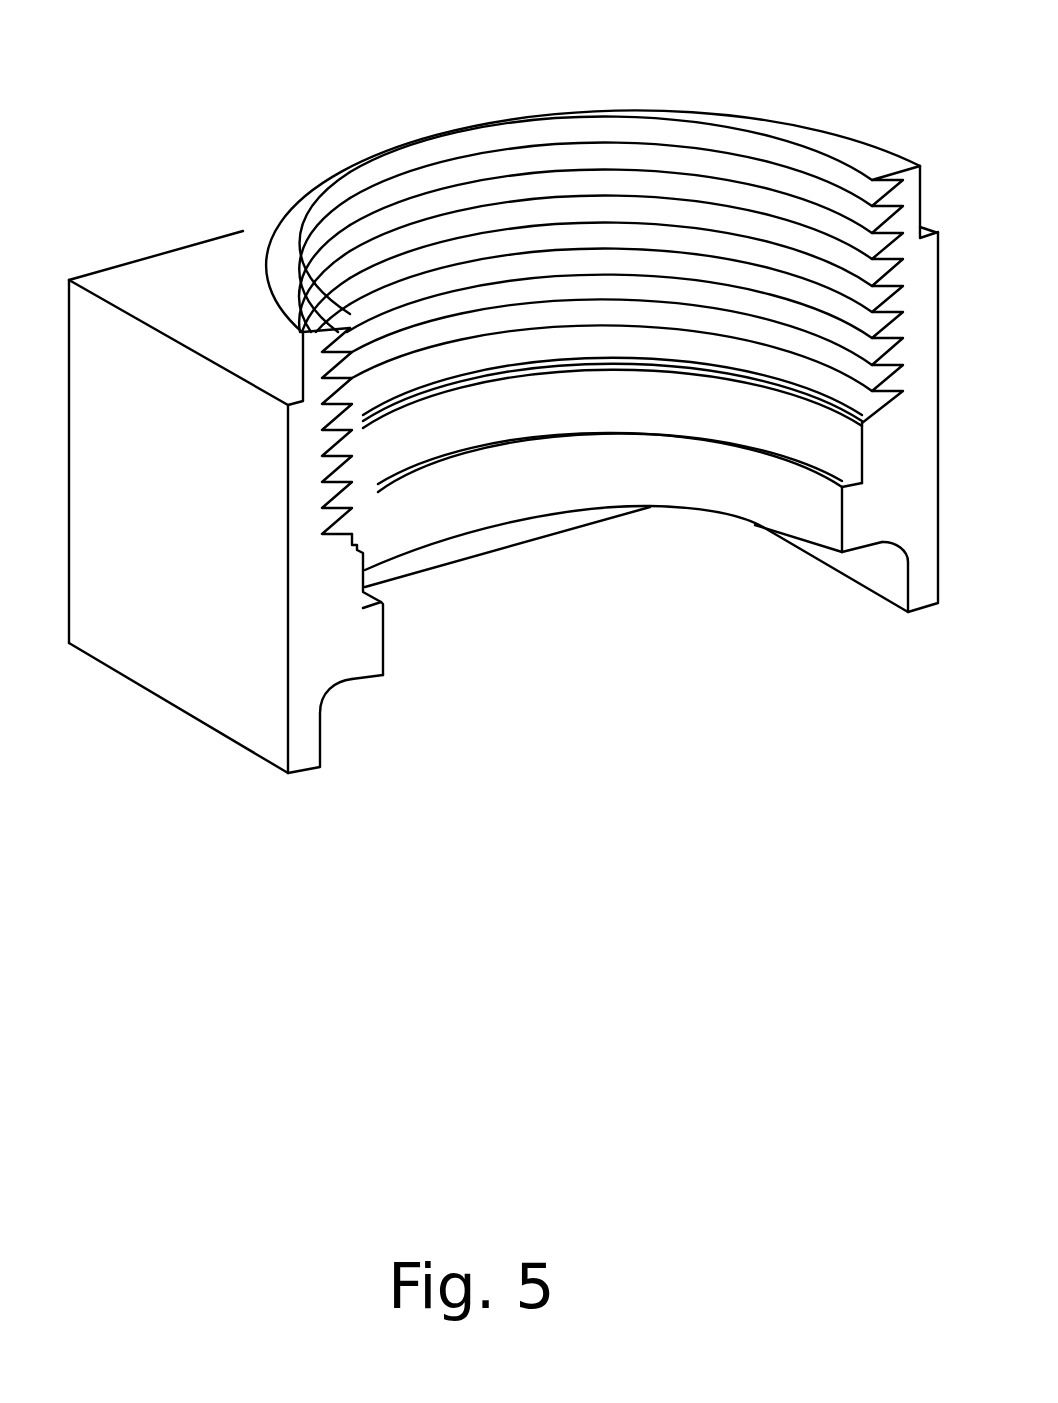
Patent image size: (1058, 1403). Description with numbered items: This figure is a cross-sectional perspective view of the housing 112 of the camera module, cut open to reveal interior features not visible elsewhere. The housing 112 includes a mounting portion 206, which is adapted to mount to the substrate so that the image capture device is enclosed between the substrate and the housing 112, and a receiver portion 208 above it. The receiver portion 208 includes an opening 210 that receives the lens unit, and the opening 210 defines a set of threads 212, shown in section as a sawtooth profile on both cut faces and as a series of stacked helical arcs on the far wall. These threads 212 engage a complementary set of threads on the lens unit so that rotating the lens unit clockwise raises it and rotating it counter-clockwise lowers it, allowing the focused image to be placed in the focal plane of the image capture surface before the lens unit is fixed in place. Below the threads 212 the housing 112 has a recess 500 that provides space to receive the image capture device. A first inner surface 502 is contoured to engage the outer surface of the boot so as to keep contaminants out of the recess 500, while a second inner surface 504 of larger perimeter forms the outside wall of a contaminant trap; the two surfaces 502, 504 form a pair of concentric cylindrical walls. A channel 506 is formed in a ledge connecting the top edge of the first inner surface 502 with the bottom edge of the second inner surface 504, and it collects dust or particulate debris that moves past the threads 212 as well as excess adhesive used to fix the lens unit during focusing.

The housing 112 is at (205, 134).
The mounting portion 206 is at (177, 710).
The receiver portion 208 is at (162, 283).
The opening 210 is at (470, 168).
The set of threads 212 is at (593, 172).
The recess 500 is at (368, 704).
The first inner surface 502 is at (813, 507).
The second inner surface 504 is at (735, 417).
The channel 506 is at (856, 486).